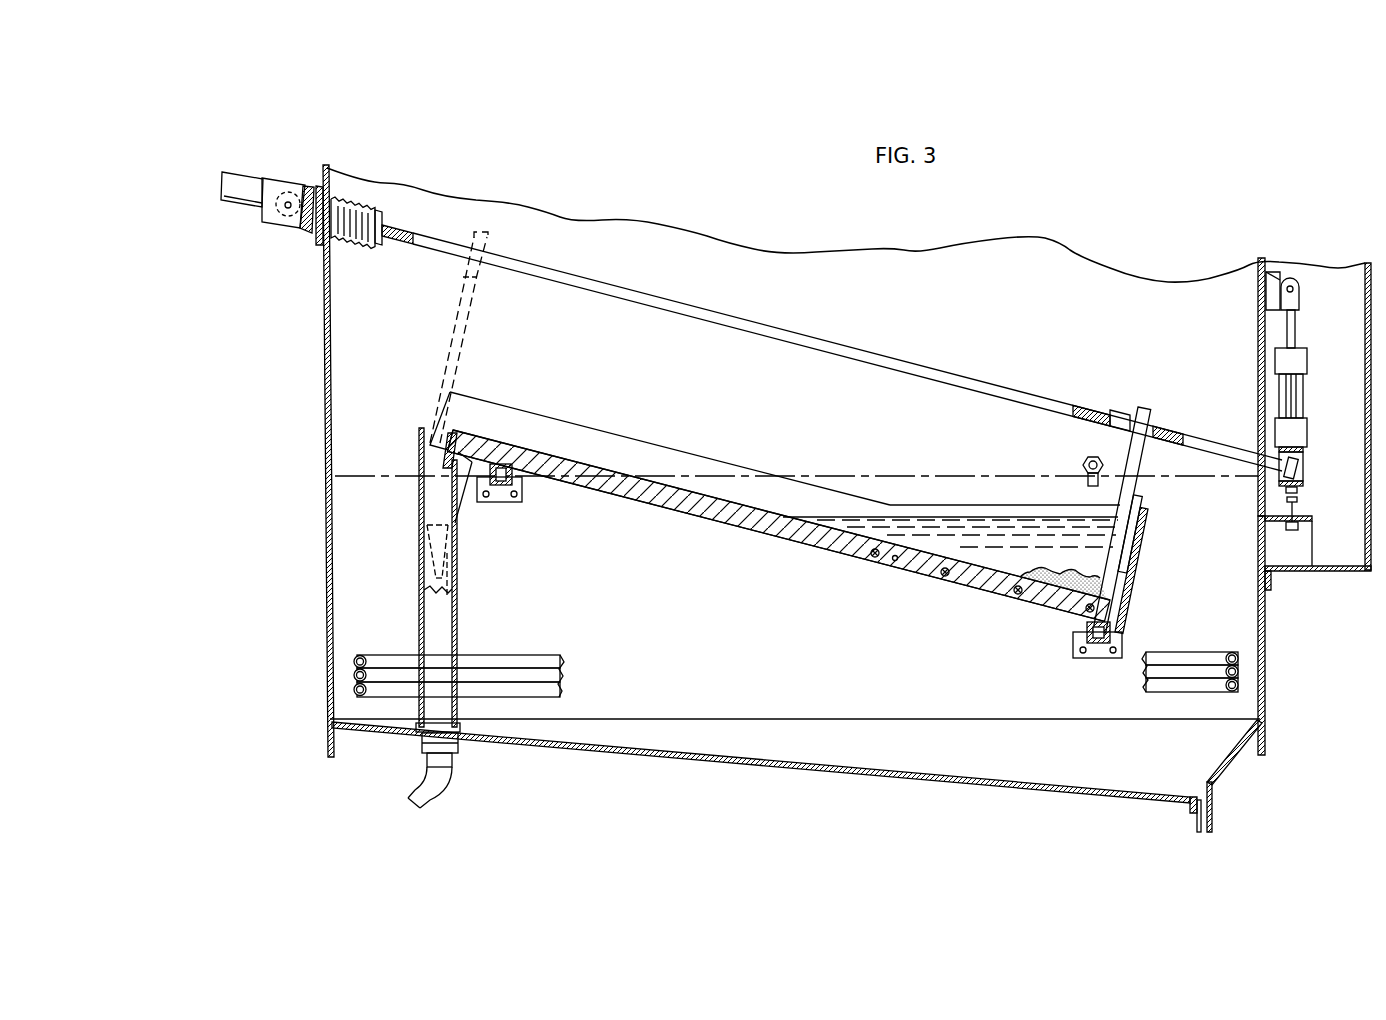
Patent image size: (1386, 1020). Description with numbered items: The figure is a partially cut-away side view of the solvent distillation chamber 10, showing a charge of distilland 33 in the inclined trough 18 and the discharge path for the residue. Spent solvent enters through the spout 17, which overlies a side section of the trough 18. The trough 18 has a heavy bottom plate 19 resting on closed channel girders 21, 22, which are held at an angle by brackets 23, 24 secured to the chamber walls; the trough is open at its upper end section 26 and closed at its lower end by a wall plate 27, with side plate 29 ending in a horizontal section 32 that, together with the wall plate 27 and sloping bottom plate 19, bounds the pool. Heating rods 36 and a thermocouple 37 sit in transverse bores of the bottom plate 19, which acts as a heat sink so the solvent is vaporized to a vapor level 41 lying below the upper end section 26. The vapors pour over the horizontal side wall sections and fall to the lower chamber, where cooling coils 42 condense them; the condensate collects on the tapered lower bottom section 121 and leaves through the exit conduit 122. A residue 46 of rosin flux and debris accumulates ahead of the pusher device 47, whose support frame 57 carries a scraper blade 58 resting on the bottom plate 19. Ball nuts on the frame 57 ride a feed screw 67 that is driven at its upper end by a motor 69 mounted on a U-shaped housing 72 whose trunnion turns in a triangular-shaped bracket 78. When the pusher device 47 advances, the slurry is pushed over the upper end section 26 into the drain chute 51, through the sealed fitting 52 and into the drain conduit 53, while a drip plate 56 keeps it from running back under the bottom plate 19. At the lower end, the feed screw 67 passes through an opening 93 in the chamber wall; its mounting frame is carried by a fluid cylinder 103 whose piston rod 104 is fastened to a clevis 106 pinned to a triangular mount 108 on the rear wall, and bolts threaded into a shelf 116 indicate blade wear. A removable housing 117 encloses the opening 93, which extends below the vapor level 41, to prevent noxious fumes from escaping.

The chamber 10 is at (1268, 660).
The spout 17 is at (1085, 460).
The inclined trough 18 is at (658, 514).
The bottom plate 19 is at (705, 538).
The closed channel girder 21 is at (514, 485).
The closed channel girder 22 is at (1086, 637).
The bracket 23 is at (497, 503).
The bracket 24 is at (1104, 659).
The upper end section 26 is at (434, 440).
The wall plate 27 is at (1132, 572).
The side plate 29 is at (626, 438).
The horizontal section 32 is at (985, 505).
The charge of distilland 33 is at (940, 550).
The heating rod 36 is at (946, 578).
The thermocouple 37 is at (893, 561).
The vapor level 41 is at (906, 476).
The cooling coil 42 is at (1226, 658).
The residue 46 is at (1108, 590).
The pusher device 47 is at (1160, 406).
The drain chute 51 is at (458, 628).
The sealed fitting 52 is at (422, 745).
The drain conduit 53 is at (445, 800).
The drip plate 56 is at (445, 462).
The support frame 57 is at (1148, 464).
The scraper blade 58 is at (1140, 497).
The feed screw 67 is at (613, 285).
The motor 69 is at (252, 178).
The U-shaped housing 72 is at (288, 180).
The triangular-shaped bracket 78 is at (306, 235).
The opening 93 is at (1259, 510).
The fluid cylinder 103 is at (1300, 402).
The piston rod 104 is at (1296, 333).
The clevis 106 is at (1300, 300).
The triangular mount 108 is at (1282, 280).
The shelf 116 is at (1300, 520).
The removable housing 117 is at (1316, 560).
The tapered lower bottom section 121 is at (706, 759).
The exit conduit 122 is at (1214, 815).